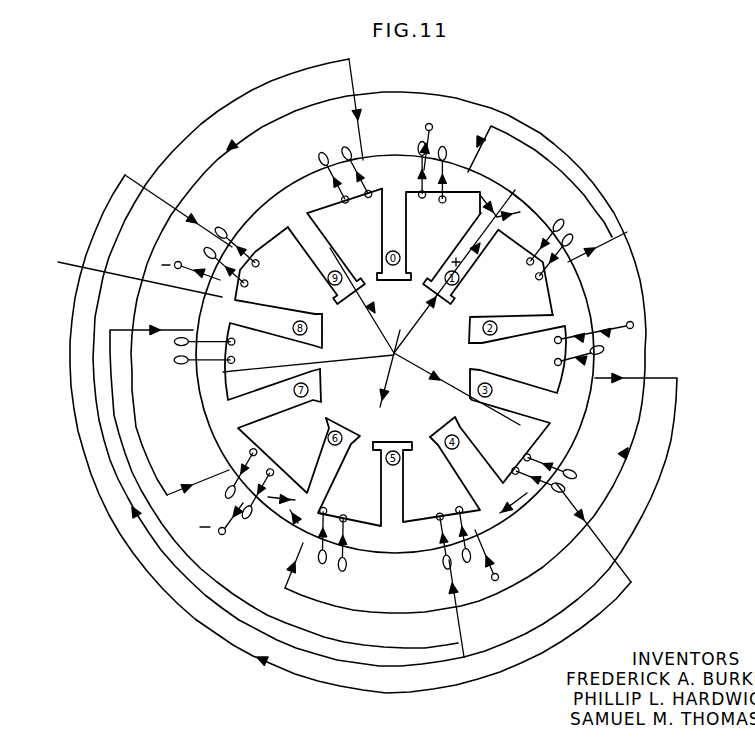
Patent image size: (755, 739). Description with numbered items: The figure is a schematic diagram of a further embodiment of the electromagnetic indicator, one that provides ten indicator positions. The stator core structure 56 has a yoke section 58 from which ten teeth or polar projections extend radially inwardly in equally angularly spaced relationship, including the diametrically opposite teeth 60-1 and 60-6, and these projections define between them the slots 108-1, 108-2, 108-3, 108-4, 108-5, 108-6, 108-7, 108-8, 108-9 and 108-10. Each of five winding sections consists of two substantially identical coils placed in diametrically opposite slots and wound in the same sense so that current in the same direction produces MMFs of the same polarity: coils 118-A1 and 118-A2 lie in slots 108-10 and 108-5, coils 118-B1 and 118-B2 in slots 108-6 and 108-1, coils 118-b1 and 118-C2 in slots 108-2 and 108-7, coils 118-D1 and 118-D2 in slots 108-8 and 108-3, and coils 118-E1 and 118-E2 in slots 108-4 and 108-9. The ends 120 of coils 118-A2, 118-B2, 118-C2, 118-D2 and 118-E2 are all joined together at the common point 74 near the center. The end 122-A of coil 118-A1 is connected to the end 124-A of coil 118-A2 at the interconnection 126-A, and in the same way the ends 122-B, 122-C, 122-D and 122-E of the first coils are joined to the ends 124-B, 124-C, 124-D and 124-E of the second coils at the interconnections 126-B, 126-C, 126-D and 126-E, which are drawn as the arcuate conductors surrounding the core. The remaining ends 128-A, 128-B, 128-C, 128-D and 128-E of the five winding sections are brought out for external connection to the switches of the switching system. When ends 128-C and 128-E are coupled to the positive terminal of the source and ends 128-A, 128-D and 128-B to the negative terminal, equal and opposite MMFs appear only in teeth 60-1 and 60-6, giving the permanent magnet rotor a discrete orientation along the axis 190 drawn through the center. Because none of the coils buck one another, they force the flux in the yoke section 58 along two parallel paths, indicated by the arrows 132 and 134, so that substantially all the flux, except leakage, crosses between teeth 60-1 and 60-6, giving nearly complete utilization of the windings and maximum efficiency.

The yoke section 58 is at (573, 417).
The slot 108-1 is at (507, 308).
The slot 108-2 is at (535, 374).
The slot 108-3 is at (495, 436).
The slot 108-4 is at (442, 473).
The slot 108-5 is at (364, 478).
The slot 108-6 is at (309, 430).
The slot 108-7 is at (289, 351).
The slot 108-8 is at (299, 293).
The slot 108-9 is at (380, 240).
The slot 108-10 is at (450, 247).
The coil 118-A1 is at (434, 183).
The coil 118-A2 is at (337, 531).
The coil 118-B1 is at (263, 481).
The coil 118-B2 is at (535, 254).
The coil 118-b1 is at (565, 346).
The coil 118-C2 is at (226, 355).
The coil 118-D1 is at (254, 257).
The coil 118-D2 is at (530, 469).
The coil 118-E1 is at (443, 531).
The coil 118-E2 is at (350, 183).
The coil end 120 is at (340, 205).
The flux path arrow 132 is at (520, 503).
The flux path arrow 134 is at (211, 311).
The stator core structure 56 is at (603, 280).
The tooth 60-1 is at (446, 290).
The tooth 60-6 is at (344, 424).
The common connection 74 is at (398, 354).
The flux axis 190 is at (413, 328).
The coil end 122-A is at (497, 150).
The coil end 122-B is at (175, 491).
The coil end 122-C is at (677, 378).
The coil end 122-D is at (193, 218).
The coil end 122-E is at (448, 585).
The coil end 124-A is at (285, 588).
The coil end 124-B is at (588, 245).
The coil end 124-C is at (146, 330).
The coil end 124-D is at (547, 507).
The coil end 124-E is at (353, 108).
The interconnection 126-A is at (607, 496).
The interconnection 126-B is at (541, 132).
The interconnection 126-C is at (656, 463).
The interconnection 126-D is at (422, 690).
The interconnection 126-E is at (237, 98).
The winding section end 128-A is at (425, 129).
The winding section end 128-B is at (228, 535).
The winding section end 128-C is at (620, 326).
The winding section end 128-D is at (189, 263).
The winding section end 128-E is at (498, 572).